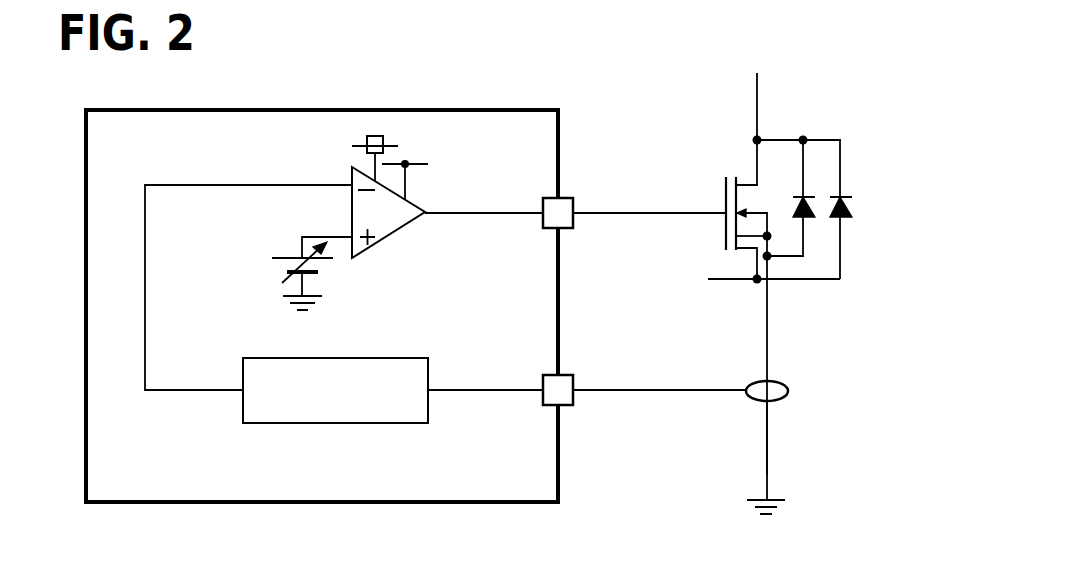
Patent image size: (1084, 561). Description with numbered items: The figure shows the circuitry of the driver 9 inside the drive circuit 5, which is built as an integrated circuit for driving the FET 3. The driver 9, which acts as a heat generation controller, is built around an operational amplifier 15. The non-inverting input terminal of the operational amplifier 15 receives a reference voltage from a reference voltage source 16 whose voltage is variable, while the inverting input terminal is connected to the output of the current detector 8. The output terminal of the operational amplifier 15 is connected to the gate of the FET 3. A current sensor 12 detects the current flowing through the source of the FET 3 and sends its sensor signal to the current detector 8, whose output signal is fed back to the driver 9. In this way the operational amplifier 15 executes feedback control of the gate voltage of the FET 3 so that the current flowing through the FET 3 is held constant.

The drive circuit 5 is at (325, 108).
The driver 9 is at (429, 211).
The operational amplifier 15 is at (393, 233).
The reference voltage source 16 is at (270, 268).
The current detector 8 is at (337, 423).
The N-channel MOSFET 3 is at (856, 203).
The current sensor 12 is at (788, 393).